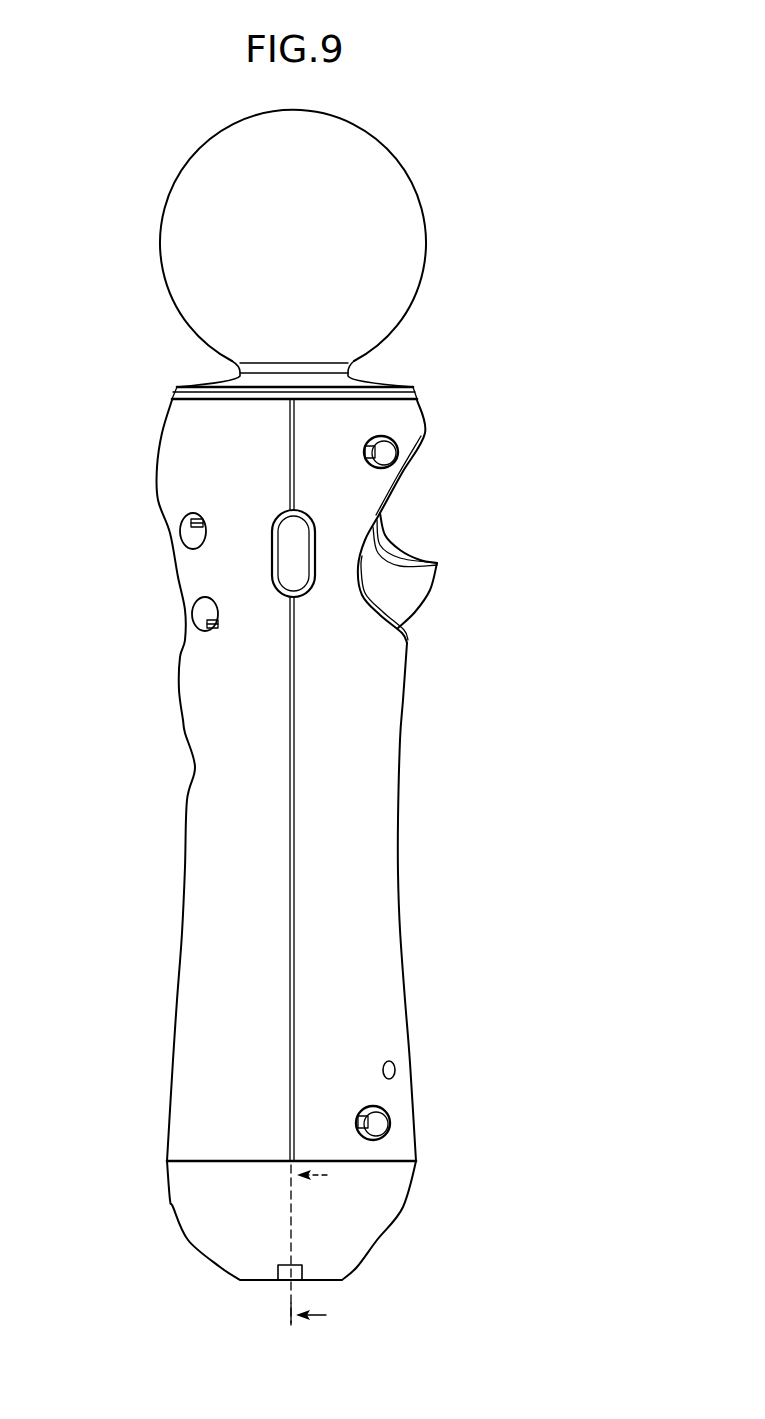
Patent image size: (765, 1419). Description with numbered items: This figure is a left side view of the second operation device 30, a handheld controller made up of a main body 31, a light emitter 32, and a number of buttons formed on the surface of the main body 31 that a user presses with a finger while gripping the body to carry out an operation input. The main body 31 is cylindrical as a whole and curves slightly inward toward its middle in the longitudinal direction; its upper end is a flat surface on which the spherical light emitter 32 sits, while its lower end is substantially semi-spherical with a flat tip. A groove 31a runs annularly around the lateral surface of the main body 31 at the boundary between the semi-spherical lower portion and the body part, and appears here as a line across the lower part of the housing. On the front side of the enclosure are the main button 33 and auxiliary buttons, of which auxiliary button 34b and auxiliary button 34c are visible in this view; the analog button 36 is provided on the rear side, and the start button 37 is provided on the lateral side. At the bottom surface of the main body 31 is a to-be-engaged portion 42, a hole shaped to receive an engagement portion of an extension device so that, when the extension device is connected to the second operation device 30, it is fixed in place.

The second operation device 30 is at (327, 731).
The main body 31 is at (398, 893).
The groove 31a is at (150, 1161).
The light emitter 32 is at (425, 213).
The main button 33 is at (142, 572).
The auxiliary button 34b is at (185, 535).
The auxiliary button 34c is at (195, 617).
The analog button 36 is at (437, 563).
The start button 37 is at (297, 572).
The to-be-engaged portion 42 is at (283, 1264).